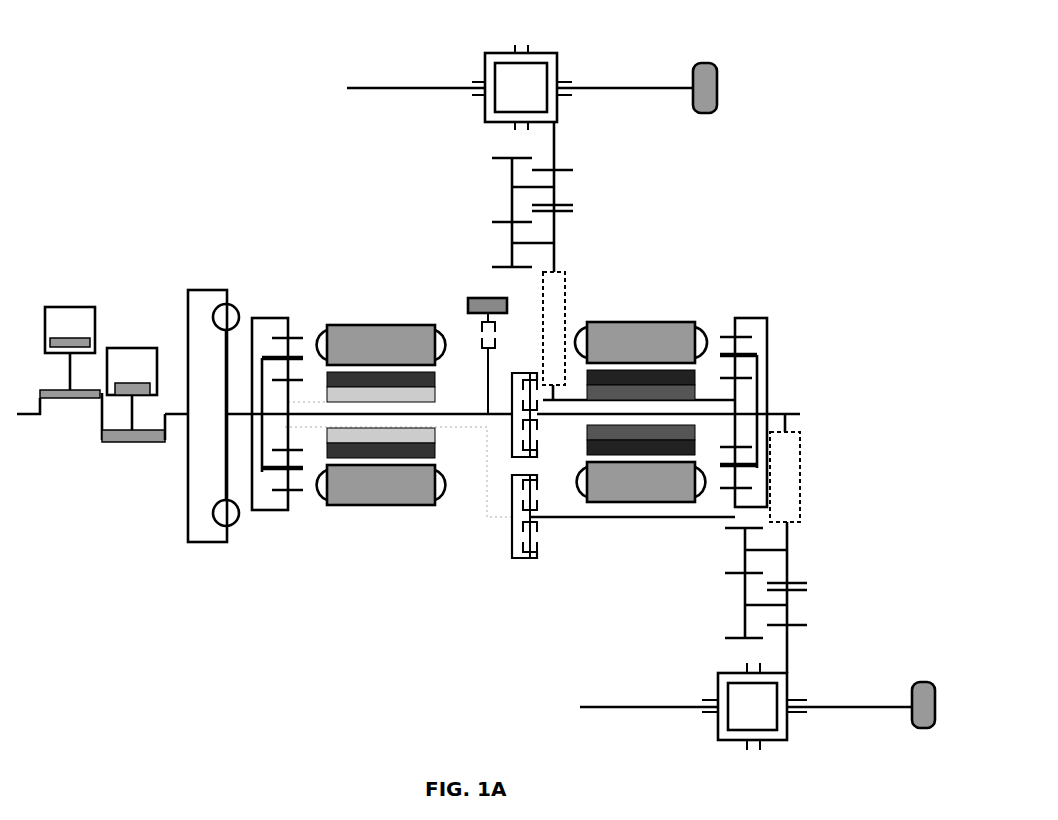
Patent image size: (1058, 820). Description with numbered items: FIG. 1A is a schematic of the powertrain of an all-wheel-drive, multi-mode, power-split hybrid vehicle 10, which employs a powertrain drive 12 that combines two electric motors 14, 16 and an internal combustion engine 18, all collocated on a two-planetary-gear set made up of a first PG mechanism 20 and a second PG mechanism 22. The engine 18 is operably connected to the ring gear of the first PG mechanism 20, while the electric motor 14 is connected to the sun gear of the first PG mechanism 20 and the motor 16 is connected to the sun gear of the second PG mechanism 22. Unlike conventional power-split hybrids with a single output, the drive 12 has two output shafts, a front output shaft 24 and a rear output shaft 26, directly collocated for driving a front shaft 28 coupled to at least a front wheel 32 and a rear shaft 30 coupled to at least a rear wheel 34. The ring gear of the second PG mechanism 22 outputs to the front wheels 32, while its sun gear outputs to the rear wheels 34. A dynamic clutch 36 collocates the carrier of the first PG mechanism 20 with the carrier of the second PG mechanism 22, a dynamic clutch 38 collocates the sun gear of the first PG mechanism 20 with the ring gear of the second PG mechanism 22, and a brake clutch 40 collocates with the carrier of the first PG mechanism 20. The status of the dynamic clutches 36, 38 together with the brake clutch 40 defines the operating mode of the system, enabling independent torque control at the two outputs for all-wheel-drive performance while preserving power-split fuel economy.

The all-wheel-drive multi-mode power-split hybrid vehicle 10 is at (786, 141).
The powertrain drive 12 is at (816, 320).
The electric motor 14 is at (378, 322).
The electric motor 16 is at (645, 320).
The internal combustion engine 18 is at (134, 294).
The first planetary gear mechanism 20 is at (263, 308).
The second planetary gear mechanism 22 is at (757, 310).
The front output shaft 24 is at (814, 562).
The rear output shaft 26 is at (462, 196).
The front shaft 28 is at (853, 708).
The rear shaft 30 is at (427, 87).
The front wheel 32 is at (928, 672).
The rear wheel 34 is at (692, 53).
The dynamic clutch 36 is at (523, 347).
The dynamic clutch 38 is at (525, 593).
The brake clutch 40 is at (490, 290).